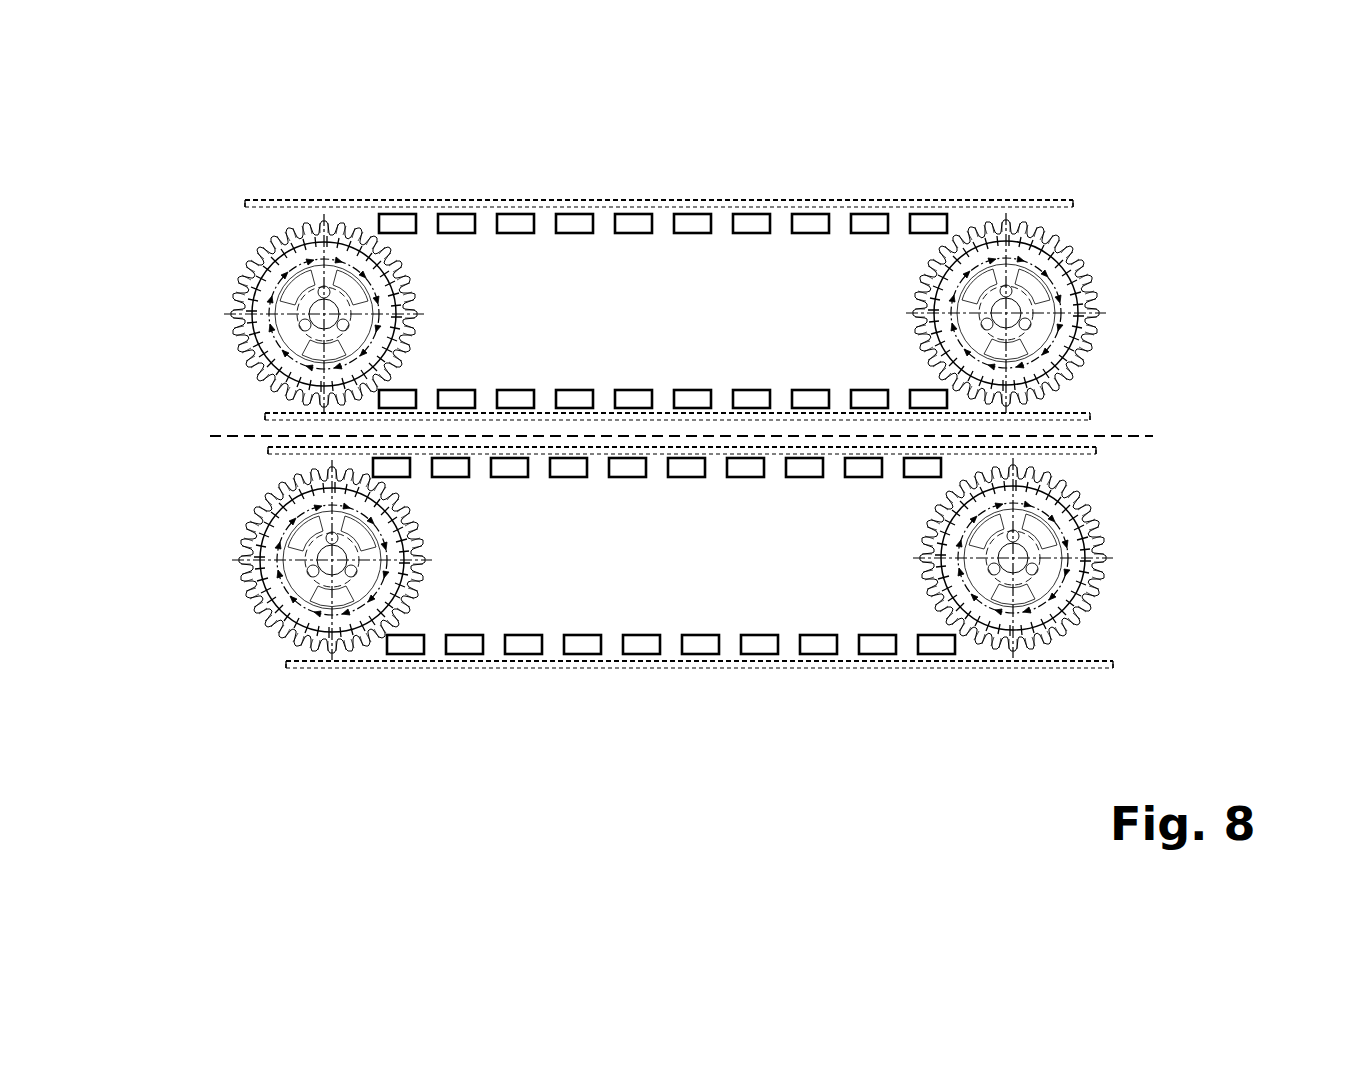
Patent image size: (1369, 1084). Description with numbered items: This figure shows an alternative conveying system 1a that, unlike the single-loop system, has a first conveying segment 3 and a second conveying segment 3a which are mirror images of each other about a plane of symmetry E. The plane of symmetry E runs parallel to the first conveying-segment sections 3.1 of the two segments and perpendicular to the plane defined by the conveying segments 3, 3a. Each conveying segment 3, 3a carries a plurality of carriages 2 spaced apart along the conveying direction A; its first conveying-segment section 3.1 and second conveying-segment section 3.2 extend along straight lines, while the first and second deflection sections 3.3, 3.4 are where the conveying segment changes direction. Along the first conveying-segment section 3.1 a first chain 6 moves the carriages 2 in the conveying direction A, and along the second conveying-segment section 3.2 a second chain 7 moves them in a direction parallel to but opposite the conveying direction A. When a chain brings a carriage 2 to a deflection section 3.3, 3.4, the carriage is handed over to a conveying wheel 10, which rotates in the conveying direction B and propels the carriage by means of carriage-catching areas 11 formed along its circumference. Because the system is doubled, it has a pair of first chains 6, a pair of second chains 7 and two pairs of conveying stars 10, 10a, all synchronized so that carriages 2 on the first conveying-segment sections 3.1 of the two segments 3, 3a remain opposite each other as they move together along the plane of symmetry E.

The conveying system 1a is at (713, 284).
The second conveying segment 3a is at (687, 519).
The conveying segment 3 is at (602, 276).
The first conveying-segment section 3.1 is at (852, 370).
The second conveying-segment section 3.2 is at (777, 192).
The first deflection section 3.3 is at (208, 287).
The second deflection section 3.4 is at (1102, 342).
The carriage 2 is at (540, 390).
The first chain 6 is at (1097, 452).
The second chain 7 is at (647, 667).
The conveying wheel 10 is at (280, 340).
The conveying star 10a is at (295, 575).
The carriage-catching area 11 is at (268, 623).
The plane of symmetry E is at (663, 442).
The conveying direction A is at (588, 182).
The conveying direction of the wheel B is at (1110, 278).